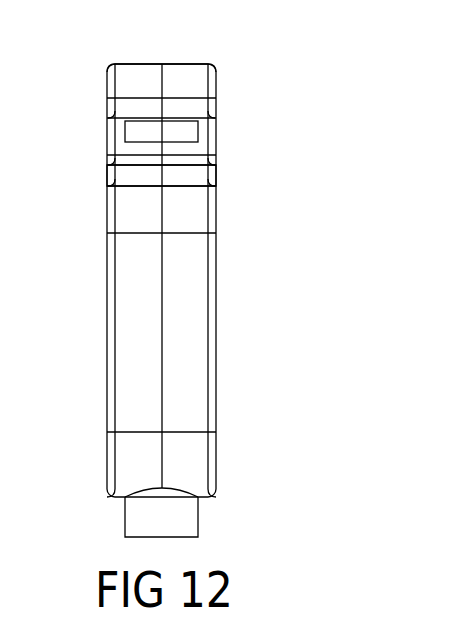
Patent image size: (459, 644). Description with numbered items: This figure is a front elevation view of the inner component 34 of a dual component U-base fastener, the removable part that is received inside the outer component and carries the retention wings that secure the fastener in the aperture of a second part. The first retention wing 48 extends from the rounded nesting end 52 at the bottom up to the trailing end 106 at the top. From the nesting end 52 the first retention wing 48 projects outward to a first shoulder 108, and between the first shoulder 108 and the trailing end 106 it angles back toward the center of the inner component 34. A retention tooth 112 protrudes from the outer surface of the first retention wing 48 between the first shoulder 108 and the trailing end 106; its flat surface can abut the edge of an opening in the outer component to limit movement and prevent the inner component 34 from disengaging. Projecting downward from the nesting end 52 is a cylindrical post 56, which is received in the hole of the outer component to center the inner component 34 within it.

The inner component 34 is at (238, 70).
The first retention wing 48 is at (130, 328).
The nesting end 52 is at (128, 483).
The post 56 is at (182, 517).
The trailing end 106 is at (157, 70).
The first shoulder 108 is at (123, 200).
The retention tooth 112 is at (140, 129).